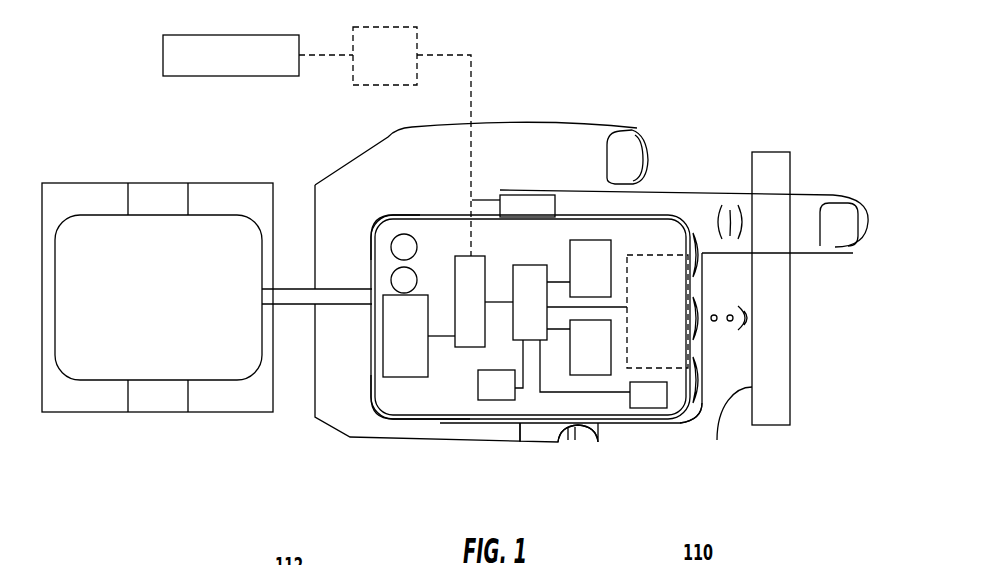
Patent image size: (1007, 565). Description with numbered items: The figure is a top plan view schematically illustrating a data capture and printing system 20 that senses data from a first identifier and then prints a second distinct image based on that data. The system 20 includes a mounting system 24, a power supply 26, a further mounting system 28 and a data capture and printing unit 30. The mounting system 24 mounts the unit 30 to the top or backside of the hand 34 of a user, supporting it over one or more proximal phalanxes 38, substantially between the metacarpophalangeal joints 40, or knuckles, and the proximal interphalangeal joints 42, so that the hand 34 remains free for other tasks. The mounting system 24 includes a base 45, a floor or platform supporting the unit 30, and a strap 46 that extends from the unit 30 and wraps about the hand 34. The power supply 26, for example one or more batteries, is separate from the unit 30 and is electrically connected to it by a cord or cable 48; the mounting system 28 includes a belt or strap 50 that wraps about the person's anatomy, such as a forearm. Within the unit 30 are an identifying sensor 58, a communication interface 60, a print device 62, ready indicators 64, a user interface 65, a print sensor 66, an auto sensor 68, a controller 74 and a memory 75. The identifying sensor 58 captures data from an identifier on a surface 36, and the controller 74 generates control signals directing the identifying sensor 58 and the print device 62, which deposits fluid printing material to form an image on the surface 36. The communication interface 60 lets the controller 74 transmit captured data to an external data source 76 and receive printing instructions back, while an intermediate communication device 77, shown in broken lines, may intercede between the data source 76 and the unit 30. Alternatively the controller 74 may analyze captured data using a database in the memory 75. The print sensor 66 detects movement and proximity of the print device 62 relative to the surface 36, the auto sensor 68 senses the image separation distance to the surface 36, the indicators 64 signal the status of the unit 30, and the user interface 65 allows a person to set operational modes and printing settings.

The data capture and printing system 20 is at (642, 206).
The mounting system 24 is at (535, 184).
The power supply 26 is at (265, 183).
The mounting system 28 is at (165, 179).
The data capture and printing unit 30 is at (440, 212).
The hand 34 is at (567, 125).
The surface 36 is at (738, 395).
The proximal phalanxes 38 is at (573, 445).
The metacarpophalangeal joints 40 is at (440, 419).
The proximal interphalangeal joints 42 is at (683, 421).
The base 45 is at (470, 348).
The strap 46 is at (521, 443).
The cord or cable 48 is at (287, 306).
The belt or strap 50 is at (147, 182).
The identifying sensor 58 is at (601, 376).
The communication interface 60 is at (407, 380).
The print device 62 is at (660, 253).
The ready indicators 64 is at (380, 228).
The user interface 65 is at (381, 405).
The print sensor 66 is at (650, 409).
The auto sensor 68 is at (592, 241).
The controller 74 is at (543, 261).
The memory 75 is at (478, 389).
The data source 76 is at (163, 52).
The intermediate communication device 77 is at (353, 30).